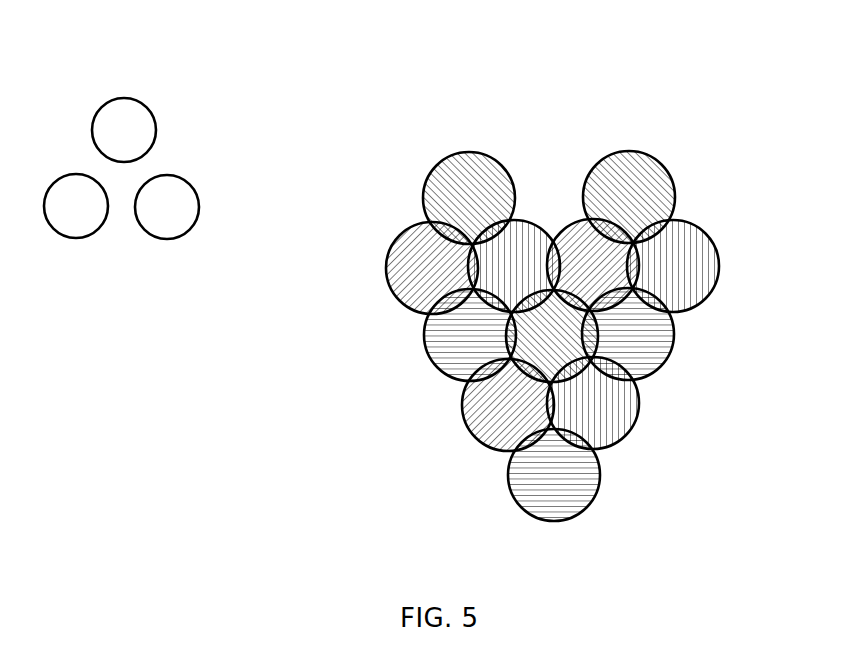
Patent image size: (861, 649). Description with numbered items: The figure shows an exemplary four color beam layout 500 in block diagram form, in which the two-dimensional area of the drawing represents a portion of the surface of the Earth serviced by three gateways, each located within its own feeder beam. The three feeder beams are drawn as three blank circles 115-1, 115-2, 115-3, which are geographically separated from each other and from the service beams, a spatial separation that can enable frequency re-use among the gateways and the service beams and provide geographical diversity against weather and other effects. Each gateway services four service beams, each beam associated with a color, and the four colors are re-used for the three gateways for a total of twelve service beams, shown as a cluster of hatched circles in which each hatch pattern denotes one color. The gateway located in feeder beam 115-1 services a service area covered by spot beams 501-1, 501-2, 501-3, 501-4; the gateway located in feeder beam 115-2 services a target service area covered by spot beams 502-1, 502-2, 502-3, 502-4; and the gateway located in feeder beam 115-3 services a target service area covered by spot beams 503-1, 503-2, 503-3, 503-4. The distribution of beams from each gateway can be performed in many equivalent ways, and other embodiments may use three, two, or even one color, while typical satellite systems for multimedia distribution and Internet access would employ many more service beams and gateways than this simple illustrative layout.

The feeder beam 115-1 is at (122, 122).
The feeder beam 115-2 is at (180, 207).
The feeder beam 115-3 is at (65, 220).
The four color beam layout 500 is at (596, 103).
The spot beam 501-1 is at (443, 183).
The spot beam 501-2 is at (402, 272).
The spot beam 501-3 is at (428, 327).
The spot beam 501-4 is at (523, 243).
The spot beam 502-1 is at (660, 183).
The spot beam 502-2 is at (562, 227).
The spot beam 502-3 is at (653, 342).
The spot beam 502-4 is at (675, 248).
The spot beam 503-1 is at (528, 321).
The spot beam 503-2 is at (480, 408).
The spot beam 503-3 is at (580, 475).
The spot beam 503-4 is at (618, 406).